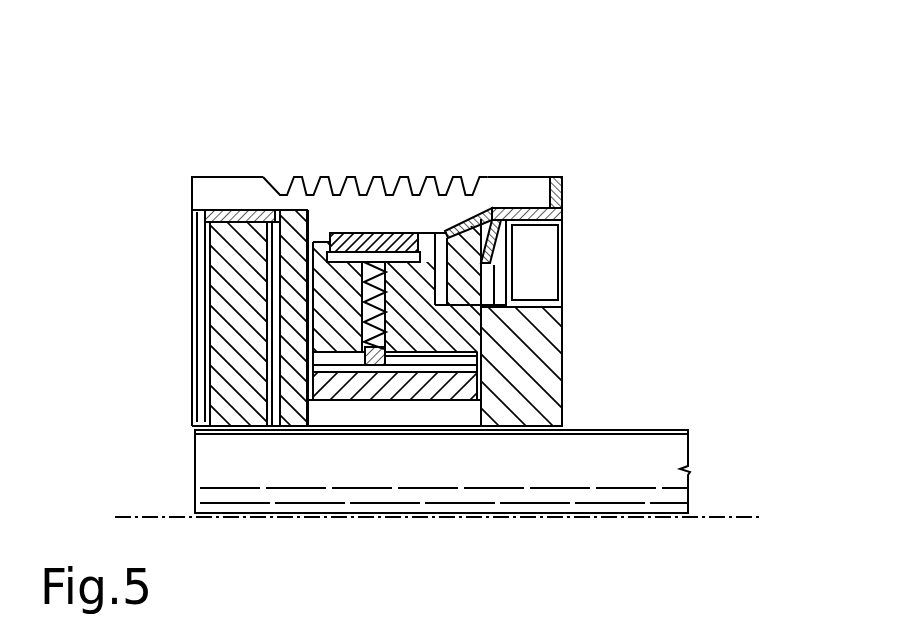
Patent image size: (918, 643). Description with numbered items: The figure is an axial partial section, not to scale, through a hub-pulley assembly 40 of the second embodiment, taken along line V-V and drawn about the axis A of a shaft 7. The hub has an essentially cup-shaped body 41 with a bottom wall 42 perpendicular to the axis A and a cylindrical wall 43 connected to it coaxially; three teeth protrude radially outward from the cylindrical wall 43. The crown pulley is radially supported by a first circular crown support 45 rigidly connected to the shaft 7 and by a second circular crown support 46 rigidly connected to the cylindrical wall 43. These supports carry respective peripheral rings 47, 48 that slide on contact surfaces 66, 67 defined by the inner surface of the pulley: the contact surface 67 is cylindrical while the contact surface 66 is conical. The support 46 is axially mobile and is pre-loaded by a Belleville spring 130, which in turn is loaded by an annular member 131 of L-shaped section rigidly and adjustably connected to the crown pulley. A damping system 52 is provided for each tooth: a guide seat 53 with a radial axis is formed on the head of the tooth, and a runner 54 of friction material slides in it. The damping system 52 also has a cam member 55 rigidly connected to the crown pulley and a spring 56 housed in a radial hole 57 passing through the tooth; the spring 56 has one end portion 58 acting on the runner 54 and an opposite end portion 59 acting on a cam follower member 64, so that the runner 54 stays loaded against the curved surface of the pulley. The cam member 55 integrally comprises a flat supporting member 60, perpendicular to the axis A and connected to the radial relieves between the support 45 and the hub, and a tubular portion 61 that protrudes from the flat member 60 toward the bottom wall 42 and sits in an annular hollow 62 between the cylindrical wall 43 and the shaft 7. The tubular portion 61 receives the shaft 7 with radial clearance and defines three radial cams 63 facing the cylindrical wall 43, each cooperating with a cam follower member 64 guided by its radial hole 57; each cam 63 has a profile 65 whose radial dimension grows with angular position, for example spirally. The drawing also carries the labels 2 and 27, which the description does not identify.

The hub-pulley assembly 40 is at (586, 174).
The toothed ring / teeth 27 is at (370, 168).
The contact surface 67 is at (233, 210).
The peripheral ring 47 is at (193, 210).
The first circular crown support 45 is at (223, 285).
The radial hole 57 is at (370, 281).
The flat supporting member 60 is at (284, 268).
The cam member 55 is at (262, 358).
The spring 56 is at (310, 424).
The guide seat 53 is at (393, 230).
The damping system 52 is at (332, 215).
The runner 54 is at (350, 212).
The tubular portion 61 is at (380, 366).
The bottom wall 42 is at (546, 373).
The profile 65 is at (435, 345).
The end portion 59 is at (372, 392).
The annular hollow 62 is at (320, 405).
The radial cam 63 is at (345, 372).
The cam follower member 64 is at (427, 405).
The second circular crown support 46 is at (494, 218).
The peripheral ring 48 is at (452, 226).
The contact surface 66 is at (536, 222).
The end portion 58 is at (408, 225).
The cylindrical wall 43 is at (482, 335).
The annular member 131 is at (527, 188).
The Belleville spring 130 is at (502, 278).
The sensor 2 is at (507, 237).
The body 41 is at (535, 293).
The shaft 7 is at (667, 453).
The axis A is at (722, 512).